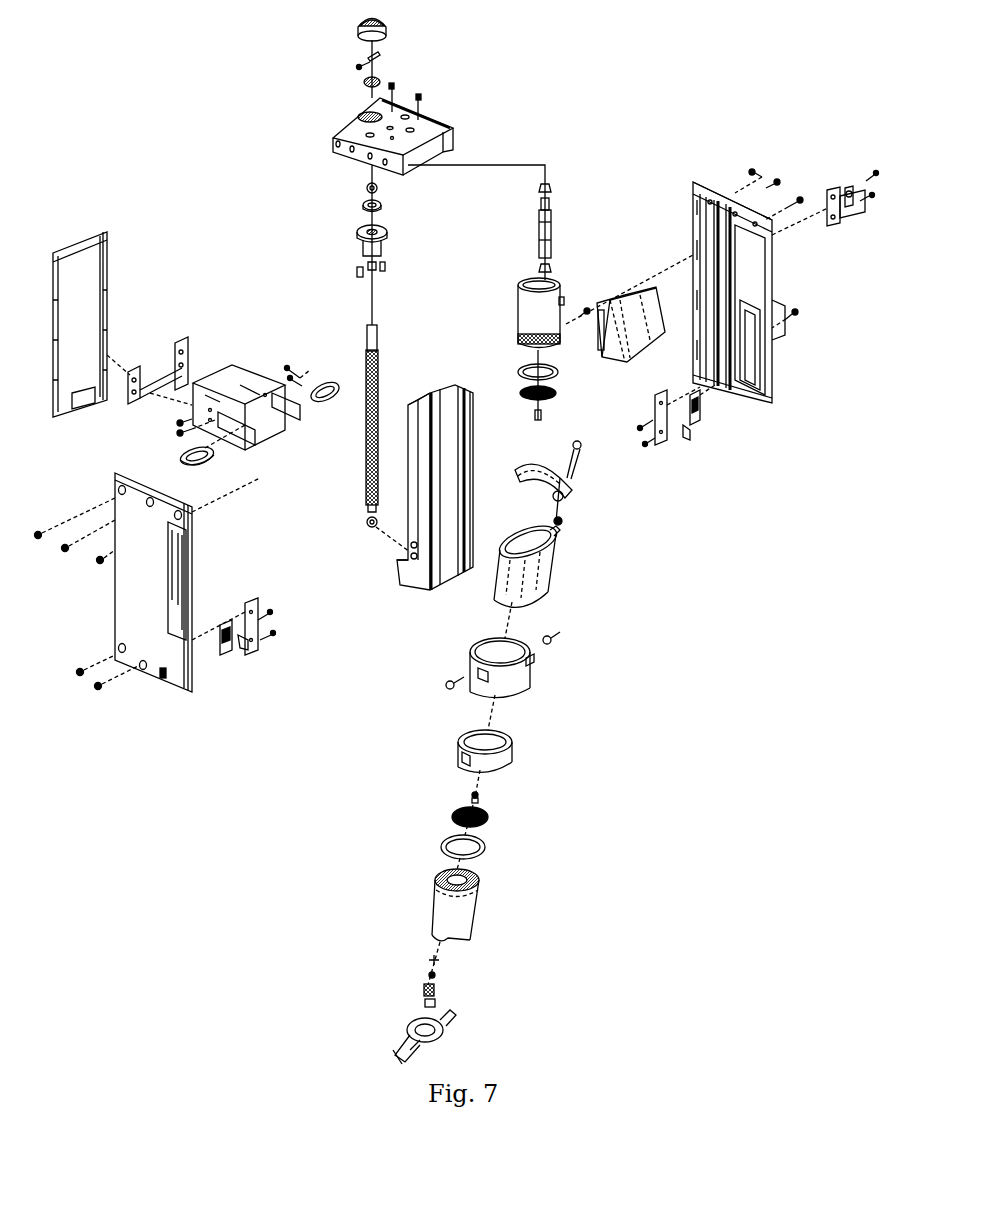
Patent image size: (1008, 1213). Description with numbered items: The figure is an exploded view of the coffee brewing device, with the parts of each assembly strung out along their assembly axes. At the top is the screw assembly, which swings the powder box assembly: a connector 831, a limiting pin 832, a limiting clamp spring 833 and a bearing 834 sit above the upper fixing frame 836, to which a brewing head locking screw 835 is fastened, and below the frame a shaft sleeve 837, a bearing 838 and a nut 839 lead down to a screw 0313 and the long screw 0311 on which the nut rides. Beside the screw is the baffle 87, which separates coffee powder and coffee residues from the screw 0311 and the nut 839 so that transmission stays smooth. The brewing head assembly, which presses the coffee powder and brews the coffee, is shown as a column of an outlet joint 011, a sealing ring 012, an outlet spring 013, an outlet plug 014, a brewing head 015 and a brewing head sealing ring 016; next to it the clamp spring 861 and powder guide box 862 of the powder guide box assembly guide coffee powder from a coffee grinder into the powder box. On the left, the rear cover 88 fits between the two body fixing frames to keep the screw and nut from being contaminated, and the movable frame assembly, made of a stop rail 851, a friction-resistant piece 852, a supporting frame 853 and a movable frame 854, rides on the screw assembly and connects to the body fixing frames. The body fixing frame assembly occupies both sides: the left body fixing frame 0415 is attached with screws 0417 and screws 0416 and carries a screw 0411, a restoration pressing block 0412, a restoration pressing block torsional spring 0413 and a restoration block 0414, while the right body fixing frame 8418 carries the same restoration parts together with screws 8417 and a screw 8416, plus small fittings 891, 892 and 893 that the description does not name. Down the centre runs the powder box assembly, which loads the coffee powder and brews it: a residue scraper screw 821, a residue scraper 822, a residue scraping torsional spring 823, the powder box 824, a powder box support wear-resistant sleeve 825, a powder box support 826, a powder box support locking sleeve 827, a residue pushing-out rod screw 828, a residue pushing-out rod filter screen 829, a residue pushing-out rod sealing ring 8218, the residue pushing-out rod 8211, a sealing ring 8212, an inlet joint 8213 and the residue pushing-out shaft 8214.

The connector 831 is at (357, 31).
The limiting pin 832 is at (366, 57).
The limiting clamp spring 833 is at (356, 67).
The bearing 834 is at (363, 83).
The brewing head locking screw 835 is at (396, 86).
The upper fixing frame 836 is at (360, 118).
The shaft sleeve 837 is at (366, 188).
The bearing 838 is at (362, 205).
The nut 839 is at (356, 232).
The screw 0313 is at (356, 270).
The screw 0311 is at (366, 330).
The baffle 87 is at (400, 576).
The outlet joint 011 is at (552, 188).
The sealing ring 012 is at (552, 222).
The outlet spring 013 is at (561, 283).
The clamp spring 861 is at (587, 308).
The powder guide box 862 is at (600, 330).
The outlet plug 014 is at (559, 372).
The brewing head 015 is at (557, 393).
The brewing head sealing ring 016 is at (542, 415).
The rear cover 88 is at (107, 315).
The supporting frame 853 is at (186, 352).
The movable frame 854 is at (236, 368).
The friction-resistant piece 852 is at (177, 424).
The stop rail 851 is at (180, 453).
The left body fixing frame 0415 is at (172, 690).
The screw 0417 is at (65, 552).
The screw 0416 is at (100, 690).
The restoration block 0414 is at (225, 656).
The restoration pressing block torsional spring 0413 is at (245, 651).
The restoration pressing block 0412 is at (258, 642).
The screw 0411 is at (277, 636).
The right body fixing frame 8418 is at (770, 397).
The screw 8417 is at (780, 181).
The hinge plate 891 is at (830, 188).
The pin 892 is at (849, 186).
The screws 893 is at (881, 166).
The screw 8416 is at (800, 318).
The residue scraper screw 821 is at (582, 455).
The residue scraper 822 is at (575, 492).
The residue scraping torsional spring 823 is at (565, 521).
The powder box 824 is at (560, 545).
The powder box support wear-resistant sleeve 825 is at (552, 640).
The powder box support 826 is at (530, 676).
The powder box support locking sleeve 827 is at (512, 758).
The residue pushing-out rod screw 828 is at (480, 797).
The residue pushing-out rod filter screen 829 is at (490, 820).
The residue pushing-out rod sealing ring 8218 is at (487, 848).
The residue pushing-out rod 8211 is at (474, 907).
The sealing ring 8212 is at (440, 962).
The inlet joint 8213 is at (440, 990).
The residue pushing-out shaft 8214 is at (448, 1040).